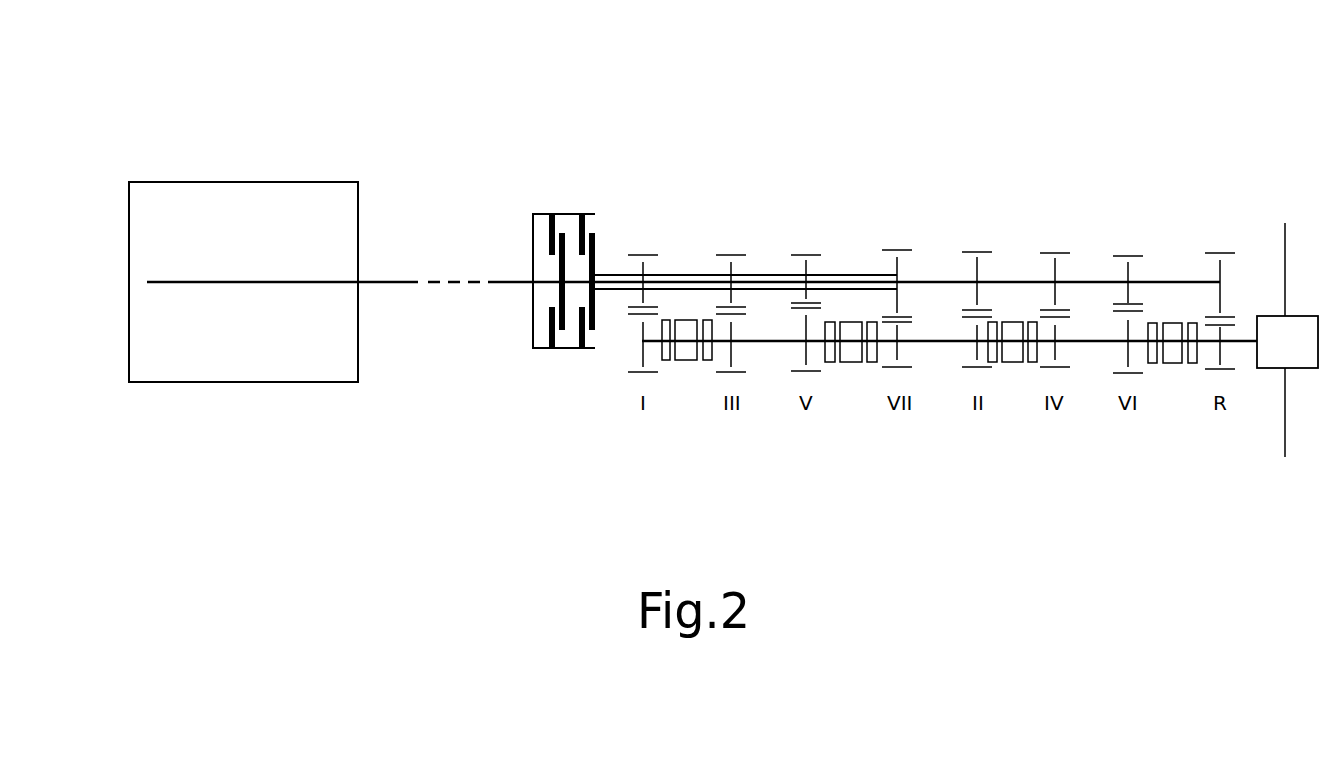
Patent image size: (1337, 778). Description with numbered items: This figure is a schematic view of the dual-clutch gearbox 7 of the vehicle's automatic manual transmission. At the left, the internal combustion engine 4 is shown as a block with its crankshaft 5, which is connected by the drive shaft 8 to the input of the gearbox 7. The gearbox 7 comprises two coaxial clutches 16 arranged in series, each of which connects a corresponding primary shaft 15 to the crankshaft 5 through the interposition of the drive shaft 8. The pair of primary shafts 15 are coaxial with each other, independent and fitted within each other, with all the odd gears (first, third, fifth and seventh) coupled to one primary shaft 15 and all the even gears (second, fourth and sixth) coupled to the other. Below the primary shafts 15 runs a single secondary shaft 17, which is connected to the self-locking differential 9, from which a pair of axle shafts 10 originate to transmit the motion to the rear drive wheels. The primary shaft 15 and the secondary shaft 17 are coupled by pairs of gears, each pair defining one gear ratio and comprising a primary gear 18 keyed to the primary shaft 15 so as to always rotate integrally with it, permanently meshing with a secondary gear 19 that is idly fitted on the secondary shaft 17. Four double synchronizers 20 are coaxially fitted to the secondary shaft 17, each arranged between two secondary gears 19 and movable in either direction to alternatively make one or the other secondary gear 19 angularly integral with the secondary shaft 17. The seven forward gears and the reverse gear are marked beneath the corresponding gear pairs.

The internal combustion engine 4 is at (207, 215).
The crankshaft 5 is at (288, 283).
The dual-clutch gearbox 7 is at (883, 108).
The drive shaft 8 is at (493, 280).
The self-locking differential 9 is at (1287, 342).
The axle shafts 10 is at (1285, 223).
The primary shafts 15 is at (612, 272).
The clutches 16 is at (579, 357).
The secondary shaft 17 is at (781, 345).
The primary gear 18 is at (975, 262).
The secondary gear 19 is at (975, 355).
The double synchronizers 20 is at (687, 362).